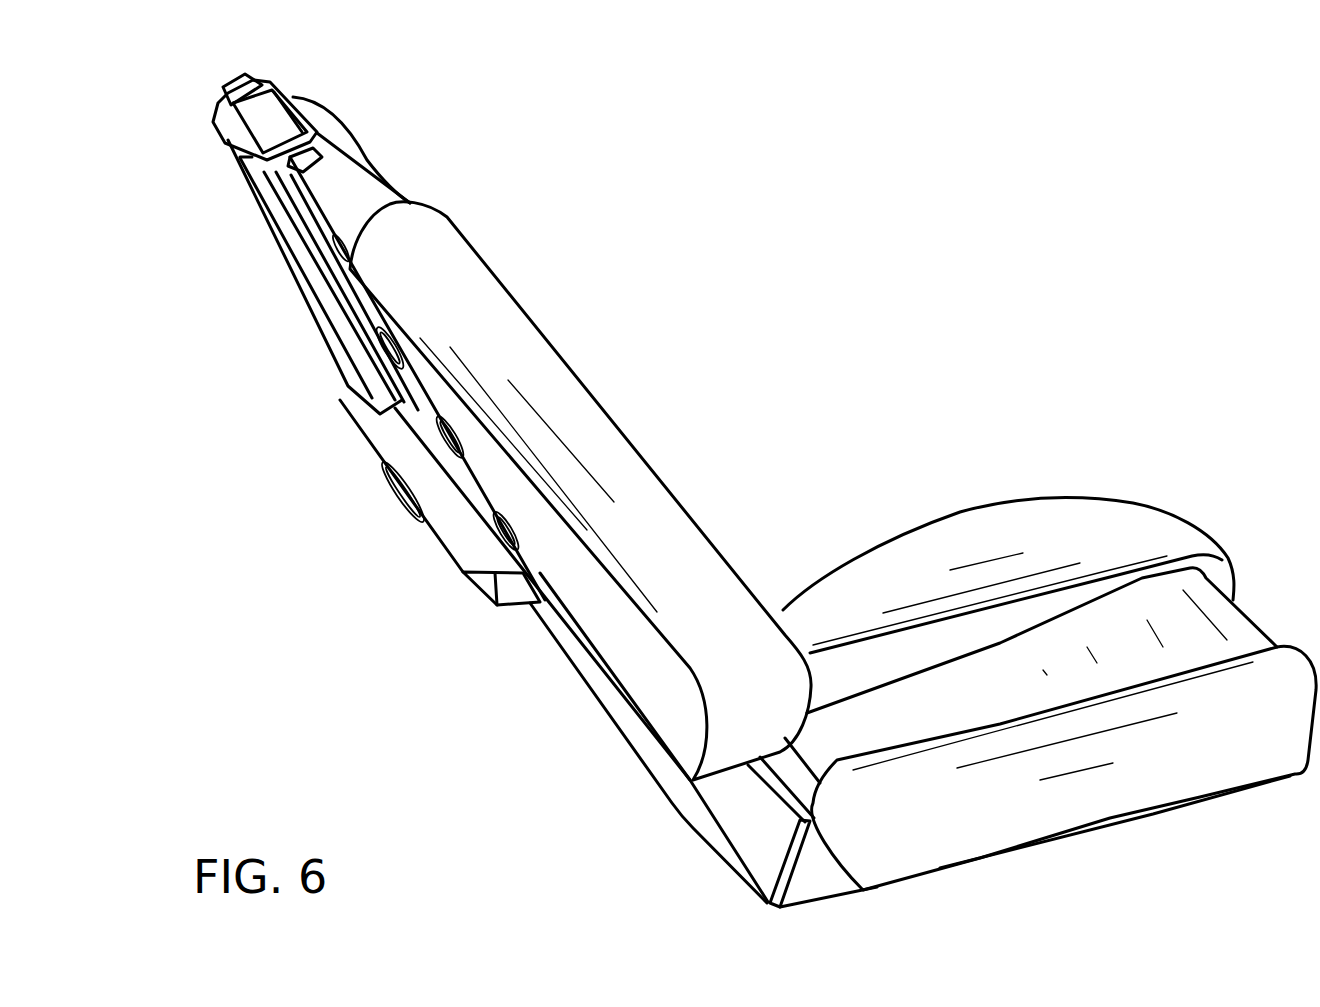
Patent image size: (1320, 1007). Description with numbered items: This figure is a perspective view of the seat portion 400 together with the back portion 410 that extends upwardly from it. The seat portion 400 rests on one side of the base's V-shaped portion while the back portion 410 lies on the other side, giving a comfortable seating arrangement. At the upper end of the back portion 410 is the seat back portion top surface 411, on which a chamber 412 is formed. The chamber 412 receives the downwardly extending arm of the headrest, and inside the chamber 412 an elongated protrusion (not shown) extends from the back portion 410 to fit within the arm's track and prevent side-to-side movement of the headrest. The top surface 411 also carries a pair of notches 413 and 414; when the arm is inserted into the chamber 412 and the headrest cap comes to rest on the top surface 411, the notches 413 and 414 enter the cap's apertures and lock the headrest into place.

The seat portion 400 is at (975, 437).
The back portion 410 is at (677, 413).
The seat back portion top surface 411 is at (200, 107).
The chamber 412 is at (372, 503).
The notch 413 is at (257, 72).
The notch 414 is at (323, 165).